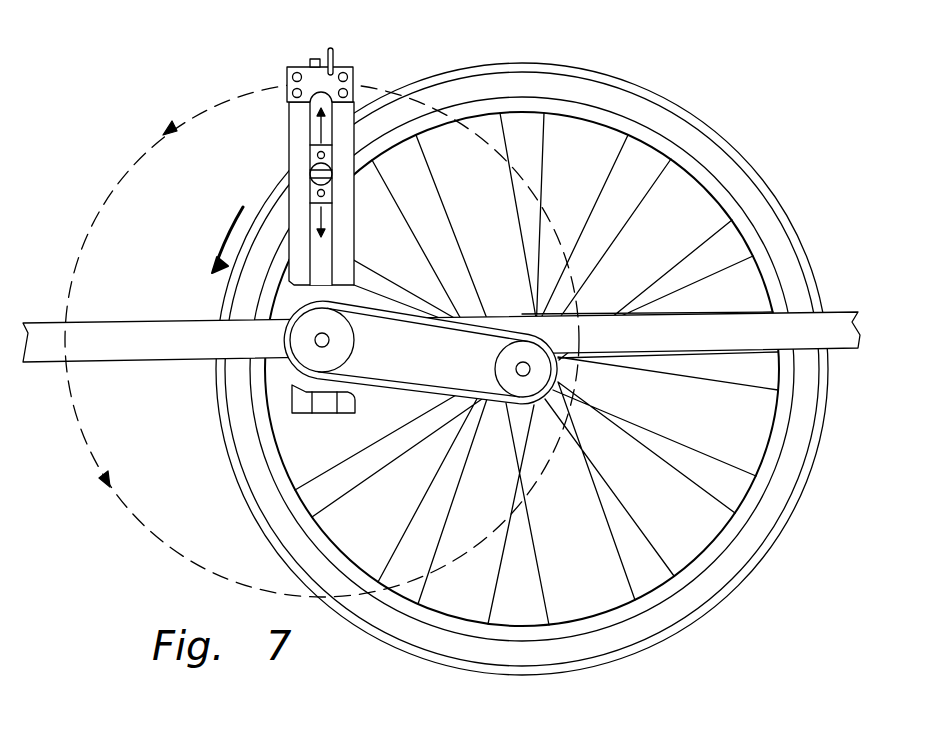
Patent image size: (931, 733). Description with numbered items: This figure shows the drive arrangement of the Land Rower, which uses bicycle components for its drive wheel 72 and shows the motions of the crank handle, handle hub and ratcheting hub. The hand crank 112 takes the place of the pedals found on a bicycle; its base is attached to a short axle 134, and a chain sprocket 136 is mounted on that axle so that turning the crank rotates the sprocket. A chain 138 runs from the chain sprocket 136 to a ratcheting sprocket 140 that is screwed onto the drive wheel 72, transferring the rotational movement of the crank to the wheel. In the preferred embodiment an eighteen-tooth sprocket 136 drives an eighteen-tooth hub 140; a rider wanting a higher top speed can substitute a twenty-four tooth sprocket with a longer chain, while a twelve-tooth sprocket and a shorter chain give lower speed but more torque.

The drive wheel 72 is at (520, 63).
The hand crank 112 is at (297, 66).
The short axle 134 is at (314, 340).
The chain sprocket 136 is at (354, 340).
The chain 138 is at (444, 306).
The ratcheting sprocket 140 is at (542, 370).